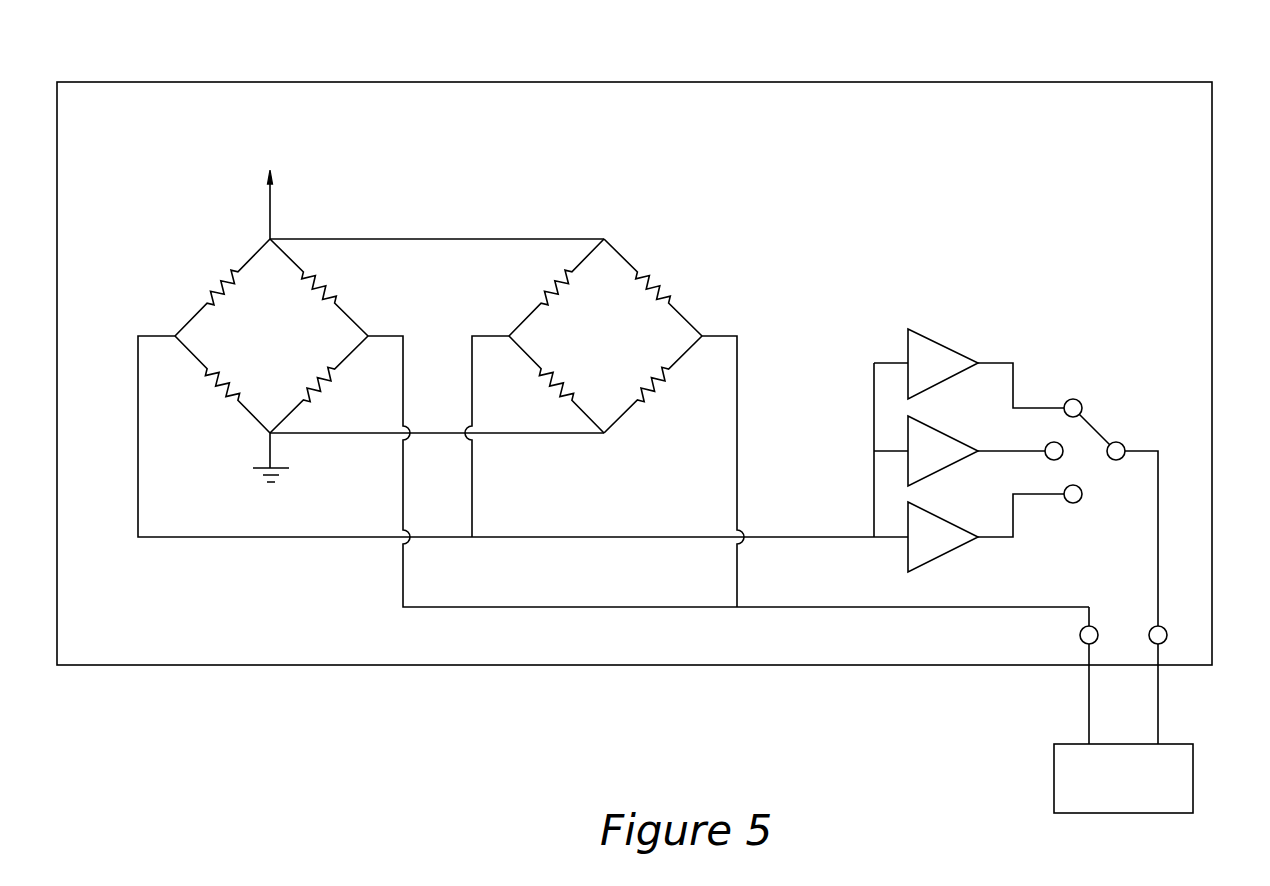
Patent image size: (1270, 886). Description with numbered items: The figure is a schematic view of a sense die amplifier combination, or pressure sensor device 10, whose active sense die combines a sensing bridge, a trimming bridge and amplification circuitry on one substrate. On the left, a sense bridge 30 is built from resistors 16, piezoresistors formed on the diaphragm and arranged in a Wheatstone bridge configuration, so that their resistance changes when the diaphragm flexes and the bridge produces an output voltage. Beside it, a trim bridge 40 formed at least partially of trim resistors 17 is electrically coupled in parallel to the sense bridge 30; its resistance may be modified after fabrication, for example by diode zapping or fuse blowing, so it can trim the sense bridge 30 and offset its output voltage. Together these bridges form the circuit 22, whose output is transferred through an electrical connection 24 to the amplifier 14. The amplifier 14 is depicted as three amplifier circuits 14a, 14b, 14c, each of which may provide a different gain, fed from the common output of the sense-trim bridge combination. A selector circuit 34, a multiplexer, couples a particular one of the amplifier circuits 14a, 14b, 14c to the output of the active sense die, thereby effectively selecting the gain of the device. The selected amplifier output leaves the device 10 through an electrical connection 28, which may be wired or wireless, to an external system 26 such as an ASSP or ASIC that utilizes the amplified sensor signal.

The pressure sensor device 10 is at (1115, 63).
The sense bridge 30 is at (600, 376).
The resistors 16 is at (222, 288).
The circuit 22 is at (417, 183).
The trim bridge 40 is at (610, 374).
The trim resistors 17 is at (553, 288).
The amplifier 14 is at (937, 423).
The amplifier circuit 14a is at (930, 345).
The amplifier circuit 14b is at (930, 430).
The amplifier circuit 14c is at (955, 550).
The electrical connection 24 is at (828, 537).
The selector circuit 34 is at (1113, 392).
The electrical connection 28 is at (1089, 720).
The external system 26 is at (1054, 778).